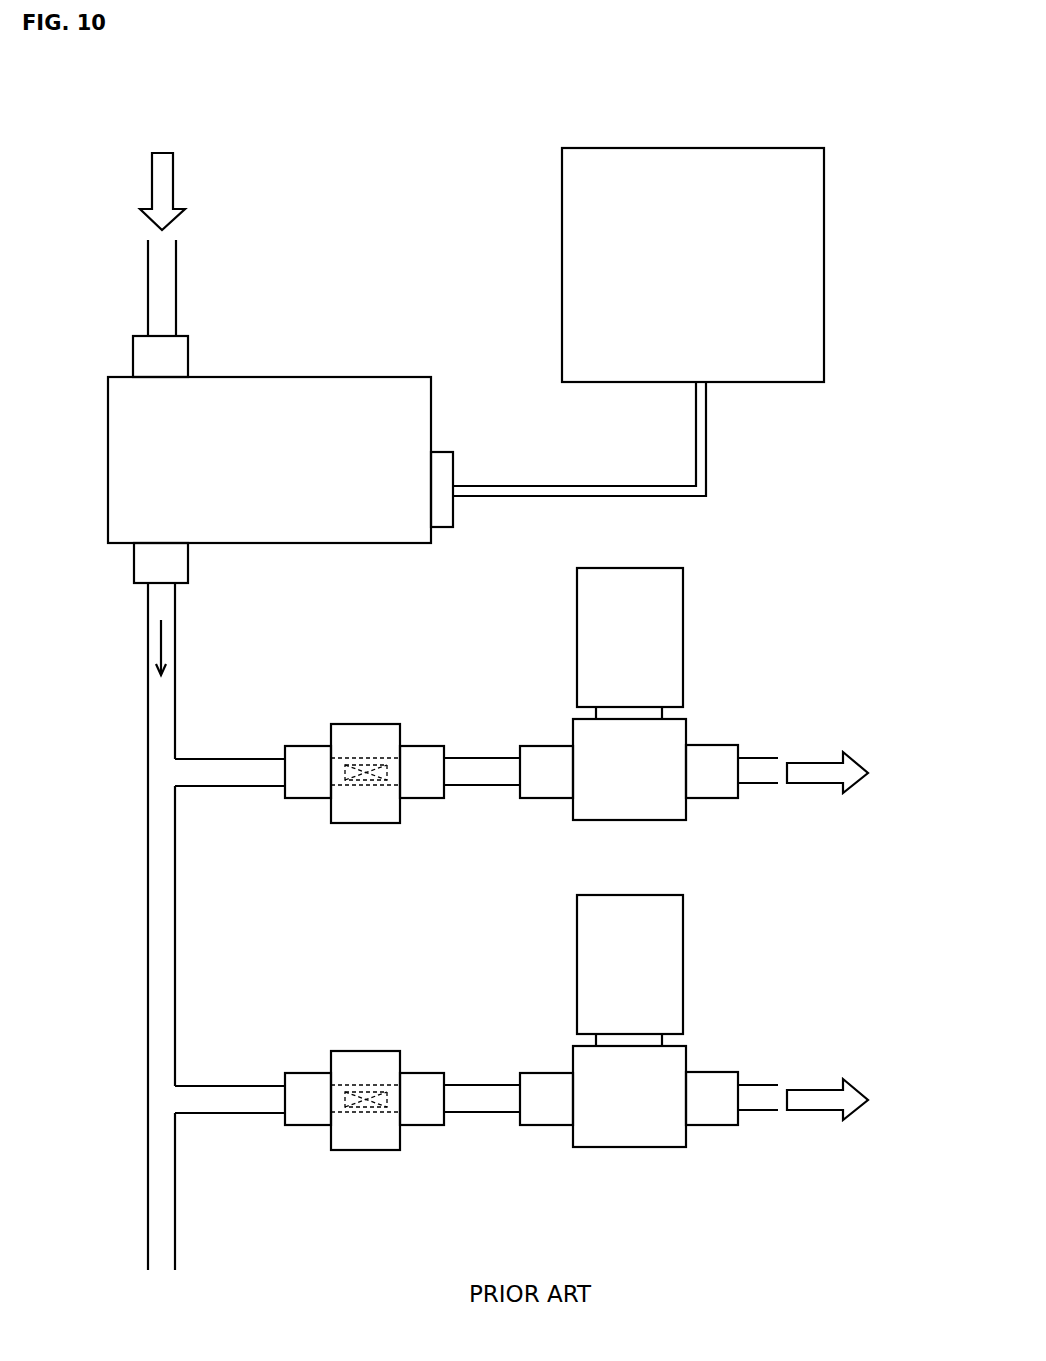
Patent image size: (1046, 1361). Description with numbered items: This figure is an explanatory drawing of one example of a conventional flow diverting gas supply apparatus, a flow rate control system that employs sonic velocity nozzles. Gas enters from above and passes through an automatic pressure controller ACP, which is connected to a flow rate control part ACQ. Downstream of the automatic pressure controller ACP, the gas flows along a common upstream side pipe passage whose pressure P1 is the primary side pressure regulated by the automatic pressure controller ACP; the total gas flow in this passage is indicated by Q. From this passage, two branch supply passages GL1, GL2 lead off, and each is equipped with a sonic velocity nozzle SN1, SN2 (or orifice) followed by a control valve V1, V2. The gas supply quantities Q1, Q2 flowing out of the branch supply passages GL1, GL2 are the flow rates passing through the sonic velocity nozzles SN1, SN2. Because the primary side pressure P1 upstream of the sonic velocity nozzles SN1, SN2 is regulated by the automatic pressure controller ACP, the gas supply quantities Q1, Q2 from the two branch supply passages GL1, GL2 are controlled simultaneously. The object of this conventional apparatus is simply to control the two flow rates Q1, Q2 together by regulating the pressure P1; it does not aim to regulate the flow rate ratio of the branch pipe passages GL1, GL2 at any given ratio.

The automatic pressure controller ACP is at (280, 460).
The flow rate control part ACQ is at (693, 265).
The pressure on the upstream side pipe passage P1 is at (160, 947).
The total gas flow Q is at (148, 648).
The branch supply passage GL1 is at (232, 789).
The branch supply passage GL2 is at (232, 1116).
The sonic velocity nozzle SN1 is at (366, 765).
The sonic velocity nozzle SN2 is at (366, 1092).
The control valve V1 is at (633, 748).
The control valve V2 is at (633, 1075).
The gas supply quantity Q1 is at (820, 772).
The gas supply quantity Q2 is at (820, 1099).